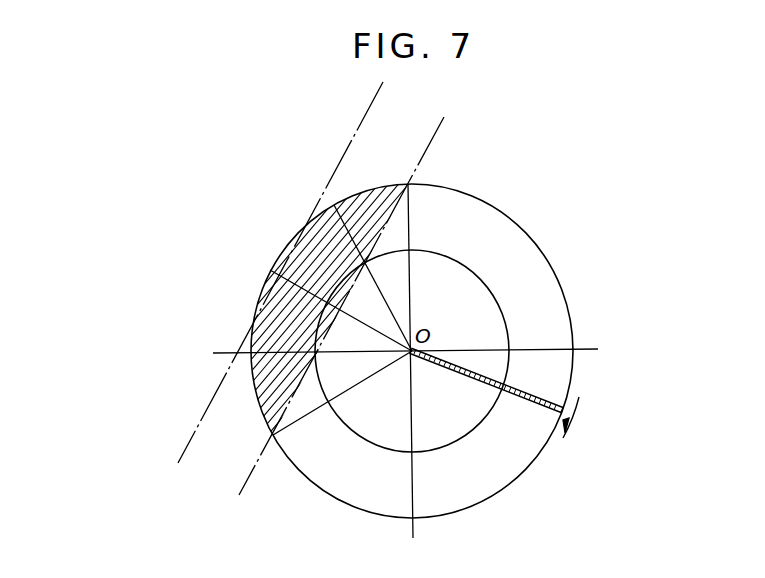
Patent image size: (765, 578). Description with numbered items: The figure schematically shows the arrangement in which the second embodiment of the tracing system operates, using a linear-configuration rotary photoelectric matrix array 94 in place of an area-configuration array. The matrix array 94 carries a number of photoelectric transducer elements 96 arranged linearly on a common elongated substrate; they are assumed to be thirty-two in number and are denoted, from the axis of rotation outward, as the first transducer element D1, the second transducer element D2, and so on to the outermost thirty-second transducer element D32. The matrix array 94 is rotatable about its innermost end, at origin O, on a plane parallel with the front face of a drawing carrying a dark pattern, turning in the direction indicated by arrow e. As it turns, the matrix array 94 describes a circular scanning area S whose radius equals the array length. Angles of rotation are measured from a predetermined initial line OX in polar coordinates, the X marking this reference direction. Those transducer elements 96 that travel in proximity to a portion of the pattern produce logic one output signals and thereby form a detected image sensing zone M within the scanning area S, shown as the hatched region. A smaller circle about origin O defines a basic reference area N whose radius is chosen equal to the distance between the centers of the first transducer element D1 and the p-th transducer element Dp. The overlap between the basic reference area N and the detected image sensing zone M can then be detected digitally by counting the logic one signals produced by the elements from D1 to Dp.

The linear-configuration rotary photoelectric matrix array 94 is at (538, 398).
The photoelectric transducer elements 96 is at (489, 377).
The circular scanning area S is at (529, 238).
The basic reference area N is at (482, 282).
The detected image sensing zone M is at (286, 260).
The initial line X is at (413, 350).
The first transducer element D1 is at (415, 356).
The second transducer element D2 is at (428, 358).
The p-th transducer element Dp is at (500, 388).
The thirty-second transducer element D32 is at (557, 414).
The direction of rotation arrow e is at (580, 415).